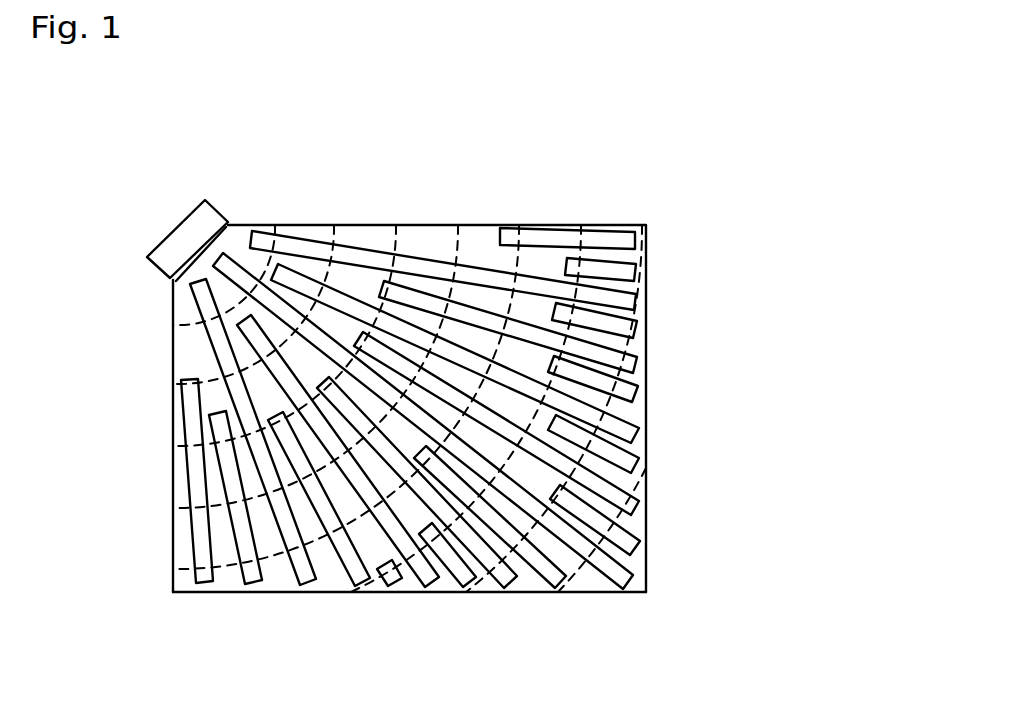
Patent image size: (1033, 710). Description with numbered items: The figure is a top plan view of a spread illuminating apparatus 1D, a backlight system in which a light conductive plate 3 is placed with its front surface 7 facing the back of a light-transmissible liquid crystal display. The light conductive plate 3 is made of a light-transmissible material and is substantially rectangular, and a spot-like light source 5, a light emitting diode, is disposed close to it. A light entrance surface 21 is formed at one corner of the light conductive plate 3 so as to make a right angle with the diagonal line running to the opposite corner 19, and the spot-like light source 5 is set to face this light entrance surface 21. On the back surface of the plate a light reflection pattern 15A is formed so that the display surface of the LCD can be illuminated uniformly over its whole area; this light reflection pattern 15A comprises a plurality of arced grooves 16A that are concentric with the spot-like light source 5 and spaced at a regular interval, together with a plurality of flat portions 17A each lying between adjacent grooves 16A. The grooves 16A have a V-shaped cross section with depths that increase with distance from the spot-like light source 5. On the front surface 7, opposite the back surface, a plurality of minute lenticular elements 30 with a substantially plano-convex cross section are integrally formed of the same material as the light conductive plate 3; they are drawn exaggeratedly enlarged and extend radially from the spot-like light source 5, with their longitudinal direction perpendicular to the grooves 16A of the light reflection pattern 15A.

The spread illuminating apparatus 1D is at (722, 199).
The light conductive plate 3 is at (665, 322).
The spot-like light source 5 is at (181, 222).
The front surface 7 is at (432, 236).
The light reflection pattern 15A is at (630, 98).
The arced grooves 16A is at (478, 250).
The flat portions 17A is at (457, 250).
The another corner 19 is at (650, 591).
The light entrance surface 21 is at (232, 222).
The minute lenticular elements 30 is at (333, 597).